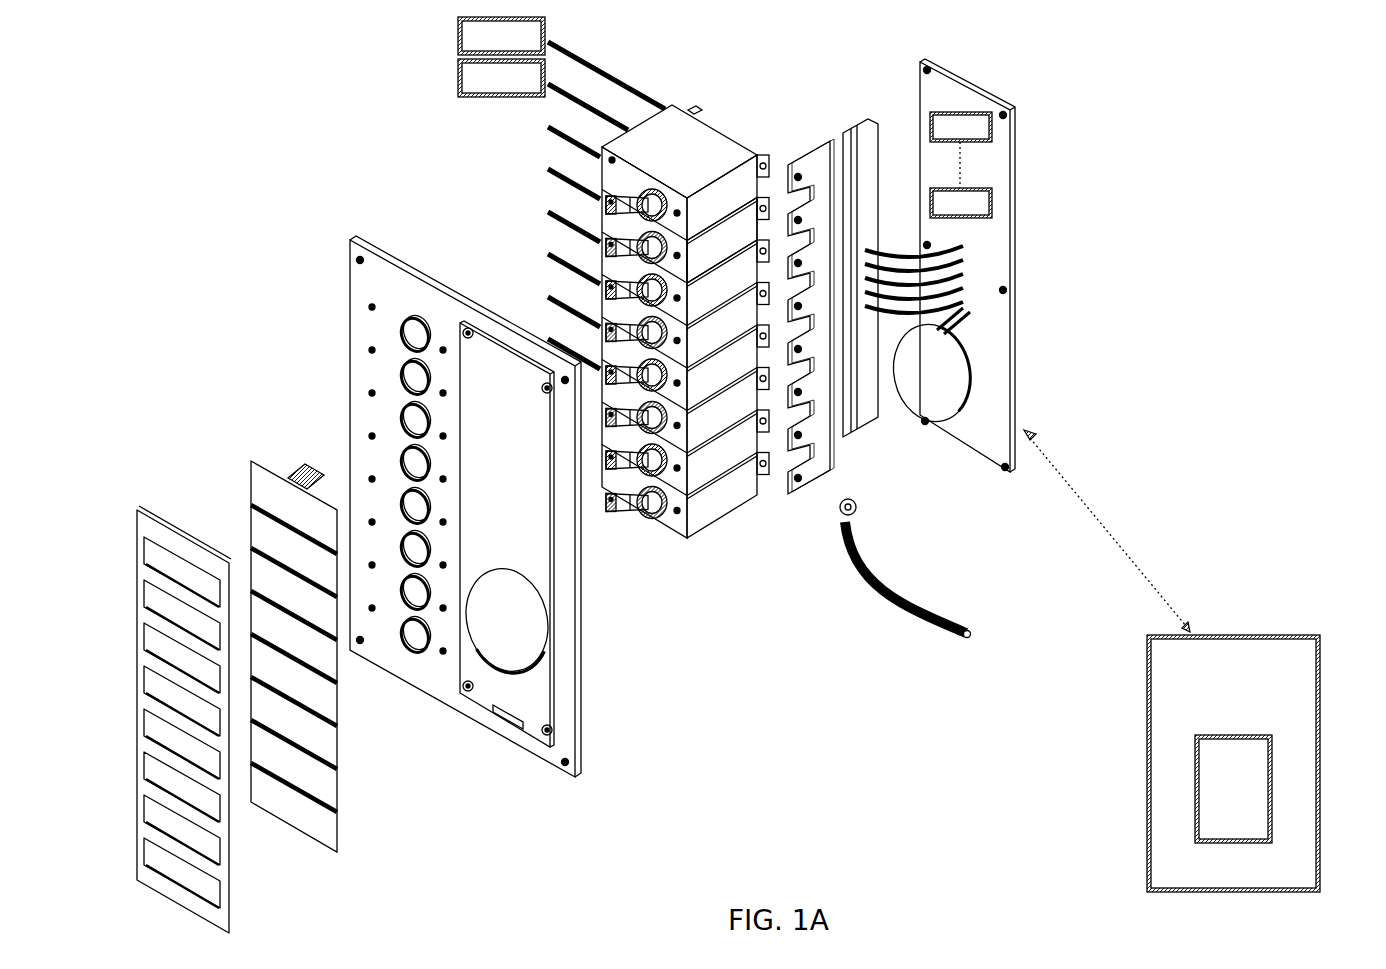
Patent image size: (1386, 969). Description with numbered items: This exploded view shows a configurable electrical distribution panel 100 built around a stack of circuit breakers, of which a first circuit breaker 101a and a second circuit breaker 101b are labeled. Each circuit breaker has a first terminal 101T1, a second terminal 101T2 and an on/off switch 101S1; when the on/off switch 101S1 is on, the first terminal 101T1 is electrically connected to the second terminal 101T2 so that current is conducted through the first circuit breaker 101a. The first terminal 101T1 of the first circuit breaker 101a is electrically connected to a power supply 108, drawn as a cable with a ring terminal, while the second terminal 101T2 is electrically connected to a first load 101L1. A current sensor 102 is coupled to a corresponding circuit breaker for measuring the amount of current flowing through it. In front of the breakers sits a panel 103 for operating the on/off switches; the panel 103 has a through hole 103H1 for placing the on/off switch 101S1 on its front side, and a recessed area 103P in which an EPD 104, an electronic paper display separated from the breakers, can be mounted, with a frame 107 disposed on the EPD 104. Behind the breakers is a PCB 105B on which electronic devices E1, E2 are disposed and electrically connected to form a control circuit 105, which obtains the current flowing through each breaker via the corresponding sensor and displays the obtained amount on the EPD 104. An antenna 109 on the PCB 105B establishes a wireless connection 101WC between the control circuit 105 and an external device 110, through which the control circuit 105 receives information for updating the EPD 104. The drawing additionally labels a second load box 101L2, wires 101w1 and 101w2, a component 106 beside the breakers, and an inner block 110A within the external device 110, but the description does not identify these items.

The configurable electrical distribution panel 100 is at (1358, 110).
The first load 101L1 is at (501, 36).
The line 2 input 101L2 is at (501, 78).
The first wire 101w1 is at (590, 56).
The second wire 101w2 is at (566, 106).
The on/off switch 101S1 is at (624, 189).
The second terminal 101T2 is at (698, 111).
The first terminal 101T1 is at (786, 134).
The first circuit breaker 101a is at (679, 321).
The circuit breaker 101b is at (722, 241).
The current sensor 102 is at (866, 125).
The panel 103 is at (412, 487).
The through hole 103H1 is at (408, 318).
The recessed area 103P is at (507, 534).
The EPD (Electronic Paper Display) 104 is at (256, 478).
The control circuit 105 is at (1064, 265).
The PCB (Printed Circuit Board) 105B is at (1018, 237).
The bus bar 106 is at (824, 464).
The frame 107 is at (133, 519).
The power supply 108 is at (962, 611).
The antenna 109 is at (946, 377).
The external device 110 is at (1233, 763).
The controller module 110A is at (1233, 789).
The wireless connection 101WC is at (1107, 531).
The electronic device E1 is at (961, 127).
The electronic device E2 is at (961, 203).